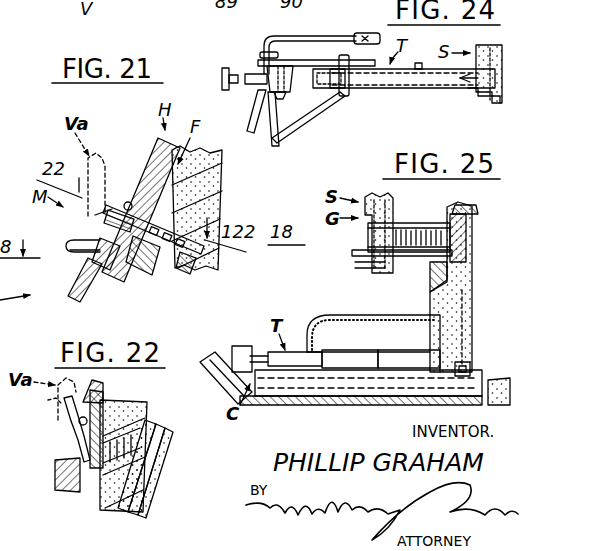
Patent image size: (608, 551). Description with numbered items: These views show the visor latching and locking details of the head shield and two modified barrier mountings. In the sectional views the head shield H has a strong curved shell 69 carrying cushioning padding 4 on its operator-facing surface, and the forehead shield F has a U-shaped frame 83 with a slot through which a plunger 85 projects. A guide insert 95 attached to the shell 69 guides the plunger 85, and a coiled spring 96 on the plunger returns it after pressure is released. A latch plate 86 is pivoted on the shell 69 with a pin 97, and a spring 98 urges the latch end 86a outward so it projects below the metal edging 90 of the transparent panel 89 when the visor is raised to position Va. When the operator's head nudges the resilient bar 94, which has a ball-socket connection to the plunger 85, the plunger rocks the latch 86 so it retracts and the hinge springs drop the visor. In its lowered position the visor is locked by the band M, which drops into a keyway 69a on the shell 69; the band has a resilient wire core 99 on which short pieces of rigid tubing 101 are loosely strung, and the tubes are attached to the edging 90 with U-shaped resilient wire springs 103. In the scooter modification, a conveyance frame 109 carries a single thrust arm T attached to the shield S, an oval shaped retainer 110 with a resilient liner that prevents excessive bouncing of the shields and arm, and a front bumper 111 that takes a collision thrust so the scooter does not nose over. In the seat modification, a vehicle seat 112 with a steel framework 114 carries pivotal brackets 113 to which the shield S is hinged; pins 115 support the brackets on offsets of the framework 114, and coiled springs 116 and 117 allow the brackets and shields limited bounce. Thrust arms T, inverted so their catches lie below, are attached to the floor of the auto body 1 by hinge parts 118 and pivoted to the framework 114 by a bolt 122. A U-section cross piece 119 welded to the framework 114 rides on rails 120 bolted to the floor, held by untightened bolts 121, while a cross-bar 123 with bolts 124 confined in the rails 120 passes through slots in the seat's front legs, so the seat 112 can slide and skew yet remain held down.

In FIG. 25, the auto body 1 is at (247, 386).
In FIG. 21, the cushioning lining or padding 4 is at (218, 166).
In FIG. 22, the cushioning lining or padding 4 is at (140, 508).
In FIG. 21, the curved shell 69 is at (162, 151).
In FIG. 22, the curved shell 69 is at (62, 478).
In FIG. 21, the keyway 69a is at (123, 258).
In FIG. 21, the U-shaped frame 83 is at (212, 186).
In FIG. 22, the U-shaped frame 83 is at (72, 492).
In FIG. 21, the plunger 85 is at (165, 252).
In FIG. 22, the plunger 85 is at (112, 500).
In FIG. 21, the latch plate 86 is at (114, 226).
In FIG. 22, the latch plate 86 is at (78, 446).
In FIG. 21, the latch end 86a is at (105, 210).
In FIG. 22, the latch end 86a is at (66, 400).
In FIG. 21, the transparent plastic panel 89 is at (70, 298).
In FIG. 21, the metal edging or binding 90 is at (78, 272).
In FIG. 21, the bar 94 is at (192, 256).
In FIG. 22, the bar 94 is at (160, 449).
In FIG. 21, the guide insert 95 is at (197, 208).
In FIG. 22, the guide insert 95 is at (88, 488).
In FIG. 21, the coiled spring 96 is at (180, 265).
In FIG. 22, the coiled spring 96 is at (133, 434).
In FIG. 21, the pin 97 is at (128, 202).
In FIG. 22, the pin 97 is at (78, 424).
In FIG. 21, the spring 98 is at (118, 222).
In FIG. 22, the spring 98 is at (98, 394).
In FIG. 21, the resilient wire core 99 is at (107, 254).
In FIG. 21, the rigid tubing pieces 101 is at (70, 242).
In FIG. 21, the U-shaped resilient wire springs 103 is at (70, 252).
In FIG. 24, the conveyance frame 109 is at (313, 112).
In FIG. 24, the oval shaped retainer 110 is at (352, 82).
In FIG. 24, the bumper 111 is at (226, 70).
In FIG. 25, the vehicle seat 112 is at (470, 289).
In FIG. 25, the pivotal brackets 113 is at (403, 256).
In FIG. 25, the steel framework 114 is at (470, 304).
In FIG. 25, the pins 115 is at (463, 240).
In FIG. 25, the coiled spring 116 is at (455, 222).
In FIG. 25, the coiled spring 117 is at (440, 260).
In FIG. 25, the hinge parts 118 is at (226, 350).
In FIG. 25, the beam-like cross piece 119 is at (472, 366).
In FIG. 25, the rails 120 is at (303, 396).
In FIG. 25, the bolts 121 is at (466, 360).
In FIG. 25, the bolt 122 is at (434, 342).
In FIG. 25, the cross-bar 123 is at (357, 366).
In FIG. 25, the bolts 124 is at (360, 380).